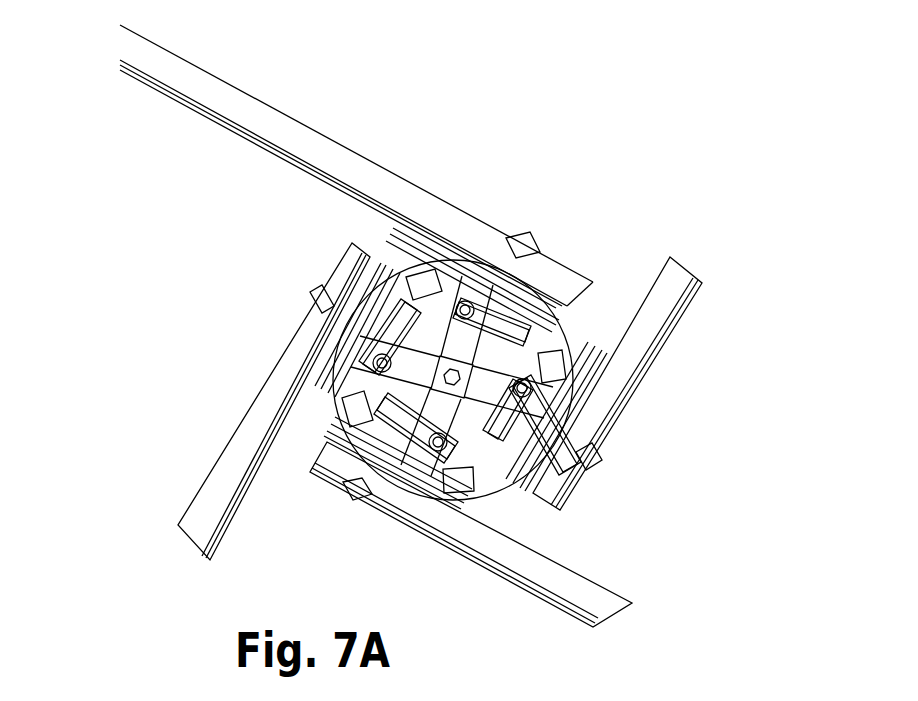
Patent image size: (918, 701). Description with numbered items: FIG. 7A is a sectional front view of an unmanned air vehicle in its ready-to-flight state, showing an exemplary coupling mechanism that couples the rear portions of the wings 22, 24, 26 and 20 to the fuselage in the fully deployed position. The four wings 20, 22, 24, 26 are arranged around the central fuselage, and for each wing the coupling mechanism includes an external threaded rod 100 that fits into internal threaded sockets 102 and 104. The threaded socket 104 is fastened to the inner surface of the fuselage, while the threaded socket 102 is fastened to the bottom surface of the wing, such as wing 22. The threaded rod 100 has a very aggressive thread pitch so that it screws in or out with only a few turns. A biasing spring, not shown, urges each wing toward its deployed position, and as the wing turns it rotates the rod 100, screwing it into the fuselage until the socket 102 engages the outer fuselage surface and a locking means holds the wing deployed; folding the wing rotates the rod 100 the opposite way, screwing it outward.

The wing 20 is at (680, 325).
The wing 22 is at (265, 100).
The wing 24 is at (490, 572).
The wing 26 is at (230, 438).
The external threaded rod 100 is at (482, 358).
The internal threaded socket 102 is at (462, 250).
The internal threaded socket 104 is at (493, 350).